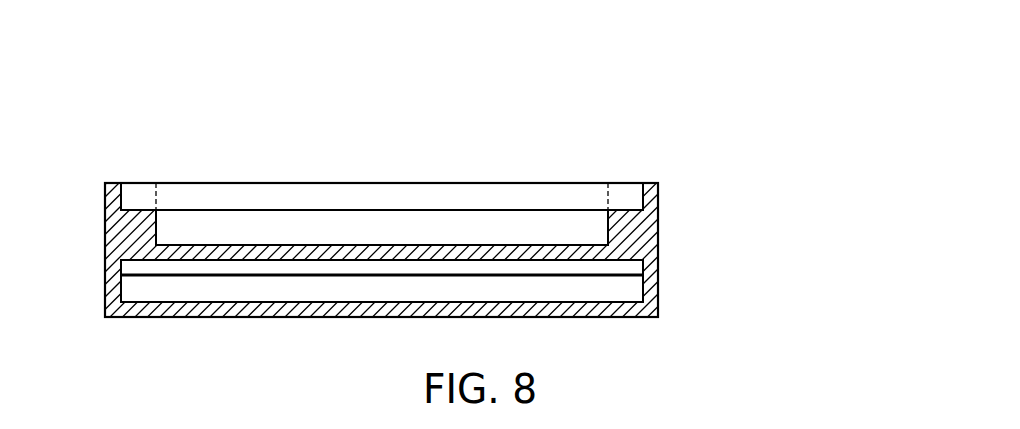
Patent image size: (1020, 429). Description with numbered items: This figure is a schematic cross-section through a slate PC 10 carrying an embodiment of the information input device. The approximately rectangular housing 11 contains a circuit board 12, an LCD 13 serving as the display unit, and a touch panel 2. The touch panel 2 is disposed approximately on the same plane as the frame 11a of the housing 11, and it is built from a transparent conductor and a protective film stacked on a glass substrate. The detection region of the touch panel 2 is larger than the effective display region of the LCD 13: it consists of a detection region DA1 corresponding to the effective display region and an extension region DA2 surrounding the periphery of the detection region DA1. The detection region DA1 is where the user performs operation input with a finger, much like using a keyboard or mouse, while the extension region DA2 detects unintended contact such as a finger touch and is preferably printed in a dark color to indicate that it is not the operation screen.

The slate PC 10 is at (439, 186).
The touch panel 2 is at (632, 197).
The LCD 13 is at (598, 227).
The housing 11 is at (645, 252).
The circuit board 12 is at (633, 288).
The frame 11a is at (114, 190).
The detection region DA1 is at (328, 193).
The extension region DA2 is at (142, 190).